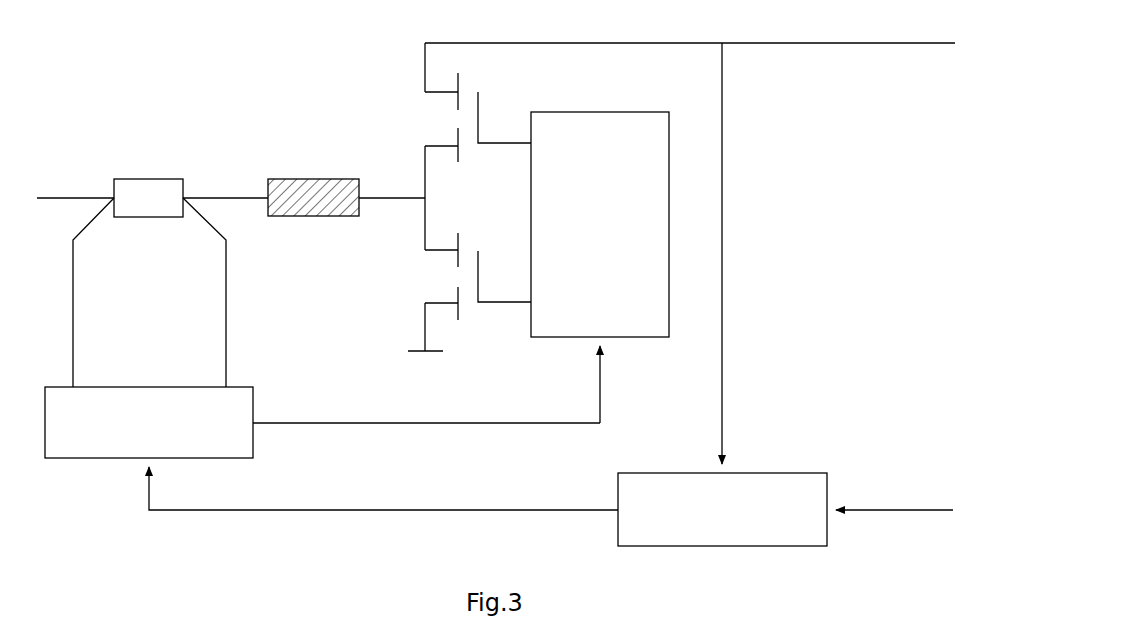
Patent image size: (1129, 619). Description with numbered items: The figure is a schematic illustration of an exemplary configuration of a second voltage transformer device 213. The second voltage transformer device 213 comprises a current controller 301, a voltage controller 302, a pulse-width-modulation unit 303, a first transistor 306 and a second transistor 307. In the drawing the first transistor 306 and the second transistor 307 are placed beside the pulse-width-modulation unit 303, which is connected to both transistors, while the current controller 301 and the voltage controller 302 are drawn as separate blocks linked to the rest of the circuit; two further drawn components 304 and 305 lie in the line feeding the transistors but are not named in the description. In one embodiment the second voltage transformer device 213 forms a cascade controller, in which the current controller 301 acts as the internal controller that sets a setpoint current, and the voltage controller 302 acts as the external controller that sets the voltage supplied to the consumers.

The second voltage transformer device 213 is at (276, 90).
The current controller 301 is at (322, 328).
The voltage controller 302 is at (551, 506).
The pulse-width-modulation unit 303 is at (636, 112).
The current sensor 304 is at (171, 179).
The resistor 305 is at (344, 179).
The first transistor 306 is at (403, 109).
The second transistor 307 is at (404, 288).